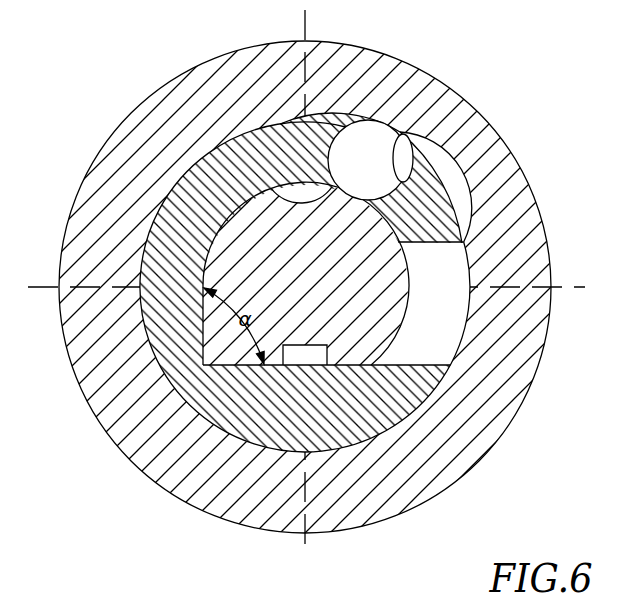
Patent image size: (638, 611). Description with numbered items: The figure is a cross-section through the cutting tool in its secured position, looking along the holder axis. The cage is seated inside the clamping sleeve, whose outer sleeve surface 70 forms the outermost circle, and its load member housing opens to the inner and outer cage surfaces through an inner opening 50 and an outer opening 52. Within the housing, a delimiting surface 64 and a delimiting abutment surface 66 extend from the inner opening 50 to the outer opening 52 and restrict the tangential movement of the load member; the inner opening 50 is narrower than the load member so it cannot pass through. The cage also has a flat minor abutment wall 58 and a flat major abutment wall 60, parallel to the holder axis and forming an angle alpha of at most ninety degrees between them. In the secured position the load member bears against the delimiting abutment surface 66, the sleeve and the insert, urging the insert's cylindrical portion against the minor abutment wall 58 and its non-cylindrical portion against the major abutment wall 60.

The inner opening 50 is at (270, 190).
The outer opening 52 is at (401, 132).
The minor abutment wall 58 is at (173, 413).
The major abutment wall 60 is at (450, 363).
The delimiting surface 64 is at (401, 131).
The delimiting abutment surface 66 is at (404, 134).
The outer sleeve surface 70 is at (214, 518).